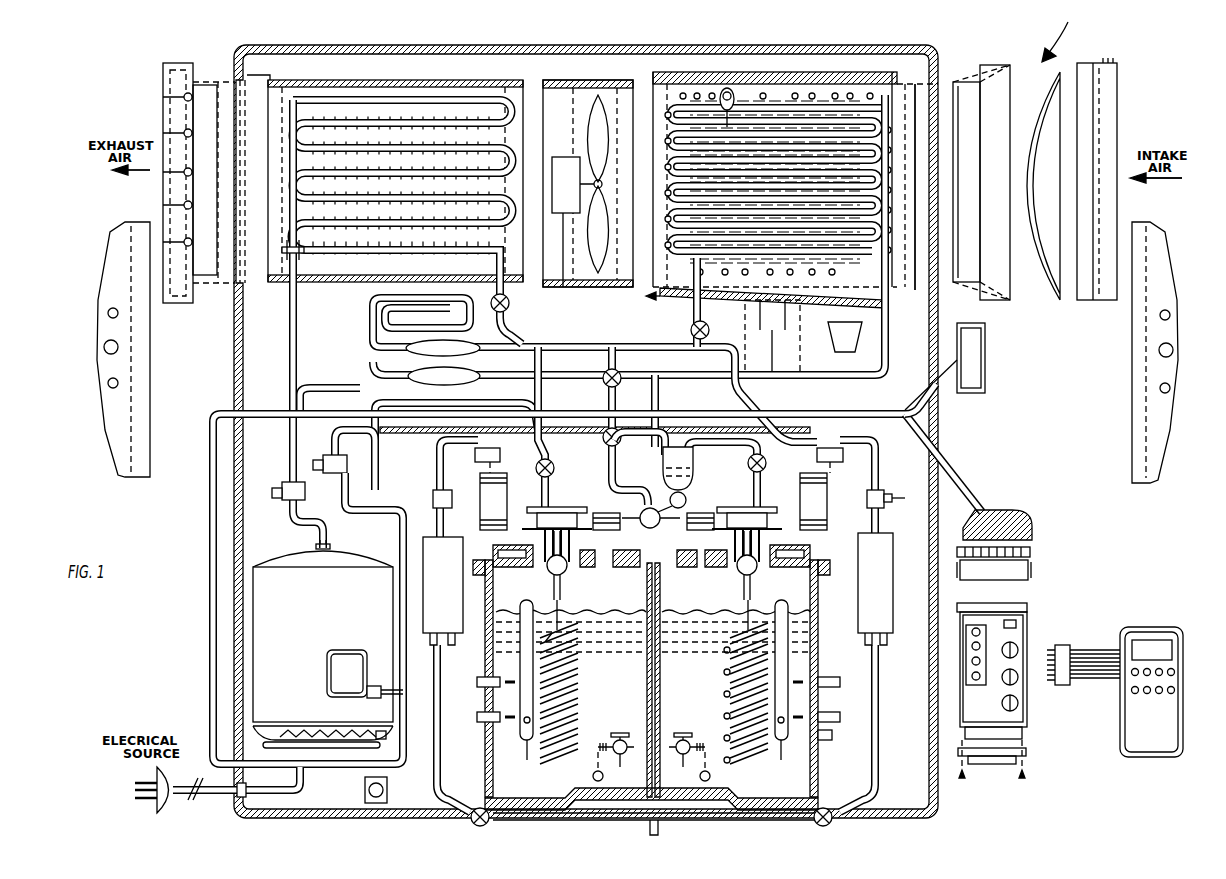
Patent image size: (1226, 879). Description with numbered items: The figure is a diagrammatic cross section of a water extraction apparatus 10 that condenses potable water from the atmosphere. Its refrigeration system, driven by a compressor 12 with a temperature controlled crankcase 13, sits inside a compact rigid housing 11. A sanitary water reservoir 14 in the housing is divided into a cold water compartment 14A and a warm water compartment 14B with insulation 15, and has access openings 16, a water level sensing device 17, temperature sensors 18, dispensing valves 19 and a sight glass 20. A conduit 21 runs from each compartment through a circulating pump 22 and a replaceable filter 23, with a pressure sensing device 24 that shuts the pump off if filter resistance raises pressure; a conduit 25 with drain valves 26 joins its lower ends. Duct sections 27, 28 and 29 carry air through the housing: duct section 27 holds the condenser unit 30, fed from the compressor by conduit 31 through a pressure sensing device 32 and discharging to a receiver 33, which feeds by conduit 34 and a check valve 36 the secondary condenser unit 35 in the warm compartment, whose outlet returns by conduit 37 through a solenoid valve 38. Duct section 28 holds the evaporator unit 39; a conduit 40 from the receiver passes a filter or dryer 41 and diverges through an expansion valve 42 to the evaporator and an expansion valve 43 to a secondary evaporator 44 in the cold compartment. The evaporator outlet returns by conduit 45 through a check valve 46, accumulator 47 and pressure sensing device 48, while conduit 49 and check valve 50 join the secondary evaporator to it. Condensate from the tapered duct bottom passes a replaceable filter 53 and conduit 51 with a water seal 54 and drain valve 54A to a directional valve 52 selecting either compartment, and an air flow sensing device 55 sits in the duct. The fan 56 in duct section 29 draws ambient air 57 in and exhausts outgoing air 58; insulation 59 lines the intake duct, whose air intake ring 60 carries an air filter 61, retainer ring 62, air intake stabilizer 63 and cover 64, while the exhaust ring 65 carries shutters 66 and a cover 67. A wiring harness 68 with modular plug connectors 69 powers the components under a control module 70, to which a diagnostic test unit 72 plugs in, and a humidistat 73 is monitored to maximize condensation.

The water extraction apparatus 10 is at (1069, 34).
The housing 11 is at (292, 45).
The compressor 12 is at (331, 618).
The temperature controlled crankcase 13 is at (310, 745).
The sanitary water reservoir 14 is at (484, 768).
The cold water compartment 14A is at (717, 598).
The warm water compartment 14B is at (620, 598).
The insulation 15 is at (818, 740).
The access openings 16 is at (608, 513).
The water level sensing device 17 is at (548, 570).
The temperature sensors 18 is at (478, 717).
The dispensing valves 19 is at (617, 735).
The sight glass 20 is at (528, 745).
The conduit 21 is at (436, 447).
The circulating pump 22 is at (454, 589).
The replaceable filter 23 is at (482, 498).
The pressure sensing device 24 is at (452, 500).
The conduit 25 is at (665, 825).
The drain valves 26 is at (489, 824).
The duct section 27 is at (313, 80).
The duct section 28 is at (812, 72).
The duct section 29 is at (598, 80).
The condenser unit 30 is at (300, 143).
The conduit 31 is at (298, 335).
The pressure sensing device 32 is at (283, 486).
The receiver 33 is at (448, 326).
The conduit 34 is at (560, 330).
The secondary condenser unit 35 is at (580, 655).
The check valve 36 is at (496, 312).
The conduit 37 is at (320, 386).
The solenoid valve 38 is at (538, 462).
The evaporator unit 39 is at (690, 100).
The conduit 40 is at (370, 355).
The filter or dryer 41 is at (408, 354).
The expansion valve 42 is at (691, 330).
The expansion valve 43 is at (765, 468).
The secondary evaporator 44 is at (722, 660).
The conduit 45 is at (885, 350).
The check valve 46 is at (616, 387).
The accumulator 47 is at (379, 468).
The pressure sensing device 48 is at (325, 460).
The conduit 49 is at (541, 396).
The check valve 50 is at (606, 445).
The conduit 51 is at (800, 411).
The directional valve 52 is at (646, 509).
The replaceable filter 53 is at (830, 340).
The water seal 54 is at (665, 452).
The drain valve 54A is at (684, 504).
The air flow sensing device 55 is at (730, 90).
The motorized blower or fan 56 is at (607, 222).
The ambient air stream 57 is at (1158, 182).
The outgoing air 58 is at (143, 172).
The insulation 59 is at (862, 75).
The air intake ring 60 is at (982, 65).
The air filter 61 is at (1040, 290).
The retainer ring 62 is at (1075, 300).
The air intake stabilizer 63 is at (990, 110).
The removable cap or cover 64 is at (1130, 435).
The exhaust ring 65 is at (185, 303).
The louvers or shutters 66 is at (190, 95).
The removable cap or cover 67 is at (150, 360).
The wiring harness 68 is at (968, 478).
The modular plug connectors 69 is at (1030, 570).
The control module 70 is at (1025, 712).
The diagnostic test unit 72 is at (1163, 741).
The humidistat 73 is at (283, 250).